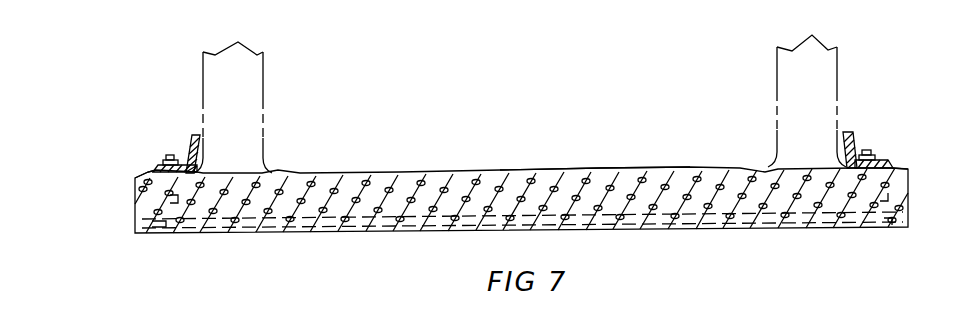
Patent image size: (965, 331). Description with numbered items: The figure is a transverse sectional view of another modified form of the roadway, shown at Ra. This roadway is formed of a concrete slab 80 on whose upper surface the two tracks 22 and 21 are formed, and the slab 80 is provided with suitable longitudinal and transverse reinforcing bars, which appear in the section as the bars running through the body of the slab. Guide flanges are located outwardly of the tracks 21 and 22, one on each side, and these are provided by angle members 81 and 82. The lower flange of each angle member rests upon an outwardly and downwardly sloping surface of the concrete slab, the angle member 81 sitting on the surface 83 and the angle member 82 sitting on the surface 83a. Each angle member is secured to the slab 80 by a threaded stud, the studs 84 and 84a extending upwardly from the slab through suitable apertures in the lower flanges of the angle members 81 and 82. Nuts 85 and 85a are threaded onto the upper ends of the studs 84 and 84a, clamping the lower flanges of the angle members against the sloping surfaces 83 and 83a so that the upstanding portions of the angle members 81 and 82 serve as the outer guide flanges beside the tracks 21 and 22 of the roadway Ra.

The concrete slab 80 is at (877, 228).
The angle member 81 is at (845, 132).
The angle member 82 is at (199, 138).
The outwardly and downwardly sloping surface 83 is at (893, 168).
The outwardly and downwardly sloping surface 83a is at (157, 173).
The threaded stud 84 is at (866, 155).
The threaded stud 84a is at (174, 160).
The nut 85 is at (882, 159).
The nut 85a is at (160, 167).
The track 21 is at (264, 176).
The track 22 is at (779, 170).
The modified form of the roadway Ra is at (576, 142).